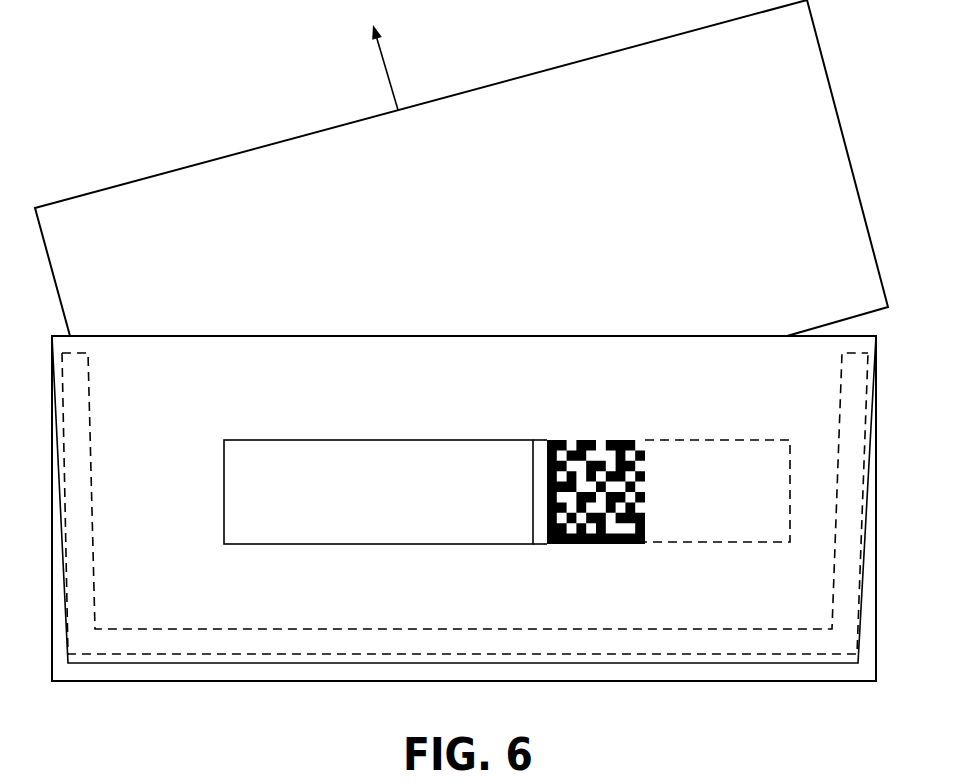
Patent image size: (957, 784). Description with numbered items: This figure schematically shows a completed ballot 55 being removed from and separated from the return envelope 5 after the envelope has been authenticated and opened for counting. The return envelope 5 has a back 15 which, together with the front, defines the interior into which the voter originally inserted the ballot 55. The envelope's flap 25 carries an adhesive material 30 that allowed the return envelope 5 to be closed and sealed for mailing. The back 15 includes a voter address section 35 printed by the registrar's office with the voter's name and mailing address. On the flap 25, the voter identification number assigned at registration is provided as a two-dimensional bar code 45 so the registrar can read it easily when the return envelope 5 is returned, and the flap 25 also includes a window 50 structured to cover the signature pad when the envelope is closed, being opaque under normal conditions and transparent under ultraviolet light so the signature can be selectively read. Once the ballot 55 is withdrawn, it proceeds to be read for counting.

The return envelope 5 is at (346, 699).
The back 15 is at (825, 670).
The flap 25 is at (272, 362).
The adhesive material 30 is at (833, 550).
The voter address section 35 is at (697, 445).
The two-dimensional bar code 45 is at (577, 440).
The window 50 is at (360, 453).
The ballot 55 is at (245, 172).